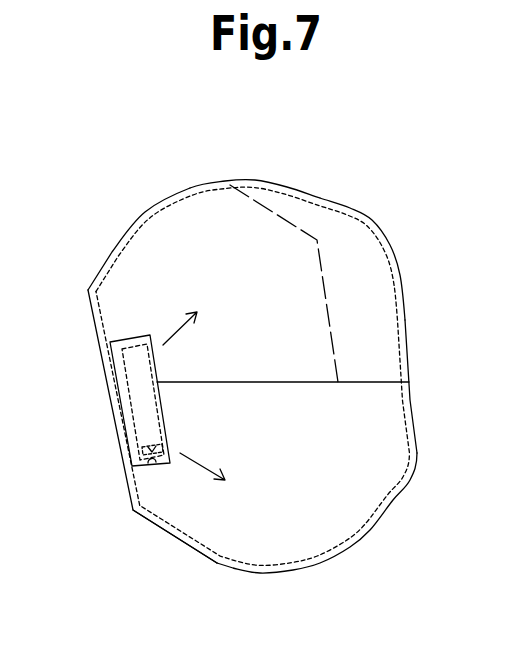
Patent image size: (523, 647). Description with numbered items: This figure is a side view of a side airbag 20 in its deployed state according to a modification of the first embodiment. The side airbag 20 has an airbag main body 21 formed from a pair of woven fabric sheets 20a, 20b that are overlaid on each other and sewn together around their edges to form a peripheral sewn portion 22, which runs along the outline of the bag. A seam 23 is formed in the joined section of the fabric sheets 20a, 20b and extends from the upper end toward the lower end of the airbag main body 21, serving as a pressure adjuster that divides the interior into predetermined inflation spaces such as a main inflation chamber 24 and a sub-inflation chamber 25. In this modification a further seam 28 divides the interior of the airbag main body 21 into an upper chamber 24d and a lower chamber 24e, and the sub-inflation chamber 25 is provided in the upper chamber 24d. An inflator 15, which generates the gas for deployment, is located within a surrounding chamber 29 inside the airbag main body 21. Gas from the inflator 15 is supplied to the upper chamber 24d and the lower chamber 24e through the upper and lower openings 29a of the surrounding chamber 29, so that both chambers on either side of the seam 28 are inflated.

The side airbag 20 is at (372, 98).
The woven fabric sheet 20a is at (200, 532).
The woven fabric sheet 20b is at (176, 566).
The airbag main body 21 is at (372, 220).
The peripheral sewn portion 22 is at (199, 186).
The seam 23 is at (327, 283).
The main inflation chamber 24 is at (155, 227).
The upper chamber 24d is at (133, 255).
The lower chamber 24e is at (348, 522).
The sub-inflation chamber 25 is at (388, 352).
The seam 28 is at (357, 383).
The surrounding chamber 29 is at (150, 466).
The openings 29a is at (153, 360).
The inflator 15 is at (110, 382).